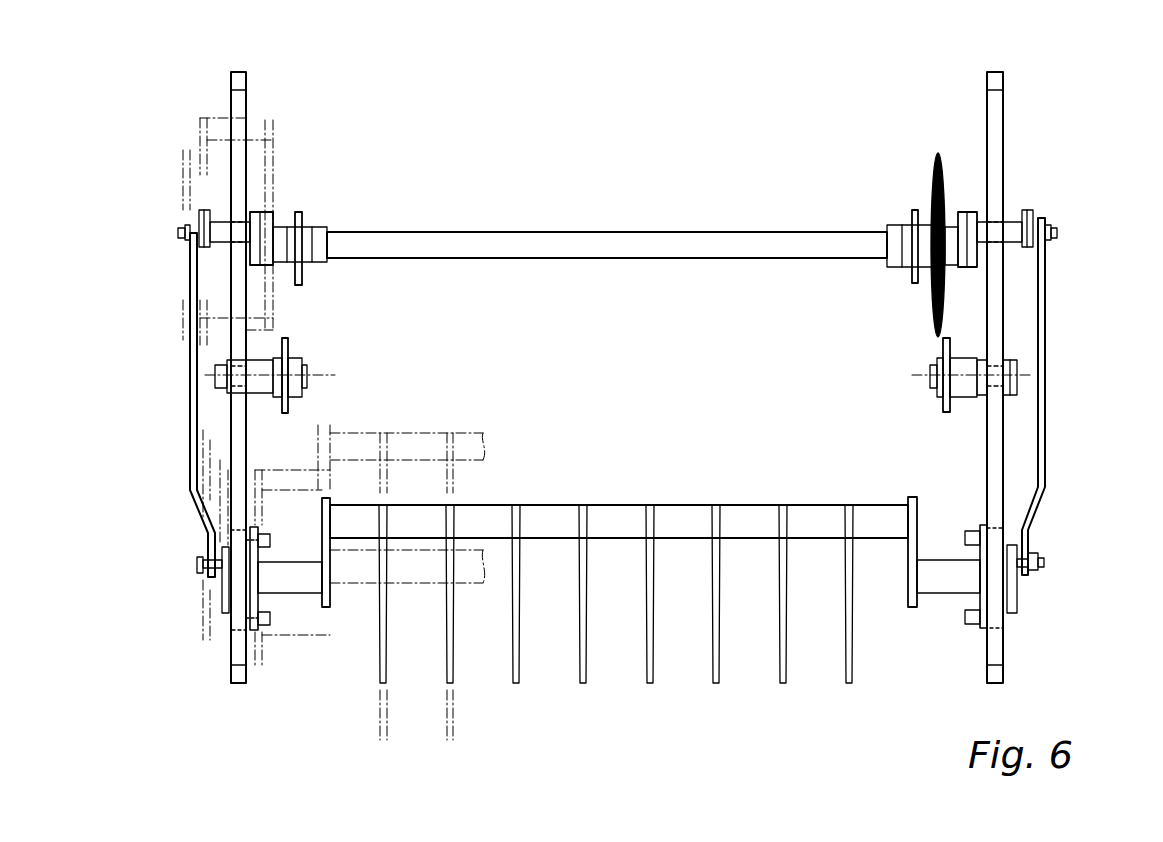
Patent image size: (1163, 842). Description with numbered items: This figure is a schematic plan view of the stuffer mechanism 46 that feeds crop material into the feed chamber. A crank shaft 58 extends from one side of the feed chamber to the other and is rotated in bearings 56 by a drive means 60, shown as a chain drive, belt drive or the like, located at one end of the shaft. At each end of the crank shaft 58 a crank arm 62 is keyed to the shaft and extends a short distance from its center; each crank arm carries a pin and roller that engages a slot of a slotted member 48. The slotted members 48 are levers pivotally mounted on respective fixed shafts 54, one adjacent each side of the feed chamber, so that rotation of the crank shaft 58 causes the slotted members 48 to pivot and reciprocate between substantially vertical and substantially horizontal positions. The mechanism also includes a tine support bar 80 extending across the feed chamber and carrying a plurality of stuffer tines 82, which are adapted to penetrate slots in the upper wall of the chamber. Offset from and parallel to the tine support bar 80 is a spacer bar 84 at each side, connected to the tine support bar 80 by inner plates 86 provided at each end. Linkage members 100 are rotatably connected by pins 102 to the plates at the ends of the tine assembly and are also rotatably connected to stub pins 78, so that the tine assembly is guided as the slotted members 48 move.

The stuffer mechanism 46 is at (1050, 130).
The slotted member 48 is at (244, 90).
The fixed shaft 54 is at (308, 366).
The bearing 56 is at (300, 228).
The crank shaft 58 is at (388, 242).
The drive means 60 is at (932, 170).
The crank arm 62 is at (266, 266).
The stub pin 78 is at (180, 235).
The tine support bar 80 is at (606, 505).
The stuffer tine 82 is at (520, 683).
The spacer bar 84 is at (290, 580).
The inner plate 86 is at (322, 546).
The linkage member 100 is at (190, 372).
The pin 102 is at (197, 565).